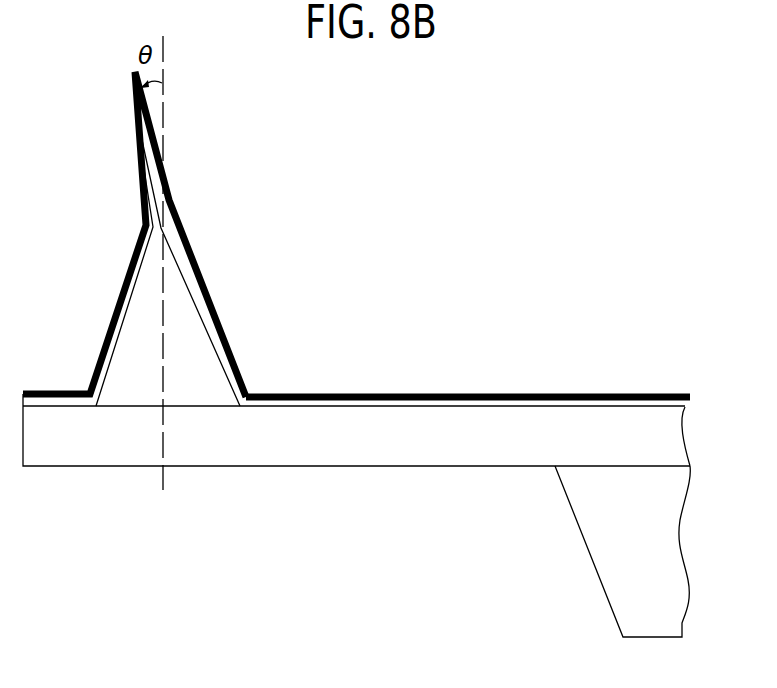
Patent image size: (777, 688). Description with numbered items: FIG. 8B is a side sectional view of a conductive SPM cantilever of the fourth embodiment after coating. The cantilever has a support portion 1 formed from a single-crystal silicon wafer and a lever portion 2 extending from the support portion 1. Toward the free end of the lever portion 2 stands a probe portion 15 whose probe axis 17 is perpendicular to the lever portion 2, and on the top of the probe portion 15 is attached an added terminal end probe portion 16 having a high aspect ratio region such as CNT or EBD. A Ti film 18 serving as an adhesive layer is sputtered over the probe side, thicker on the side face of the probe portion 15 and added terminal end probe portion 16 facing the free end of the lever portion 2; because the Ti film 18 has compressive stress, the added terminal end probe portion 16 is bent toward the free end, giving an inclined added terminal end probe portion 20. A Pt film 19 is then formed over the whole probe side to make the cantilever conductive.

The support portion 1 is at (660, 540).
The lever portion 2 is at (500, 430).
The probe portion 15 is at (135, 340).
The added terminal end probe portion 16 is at (157, 202).
The probe axis 17 is at (164, 112).
The Ti film 18 is at (318, 408).
The Pt film 19 is at (388, 397).
The inclined added terminal end probe portion 20 is at (137, 111).